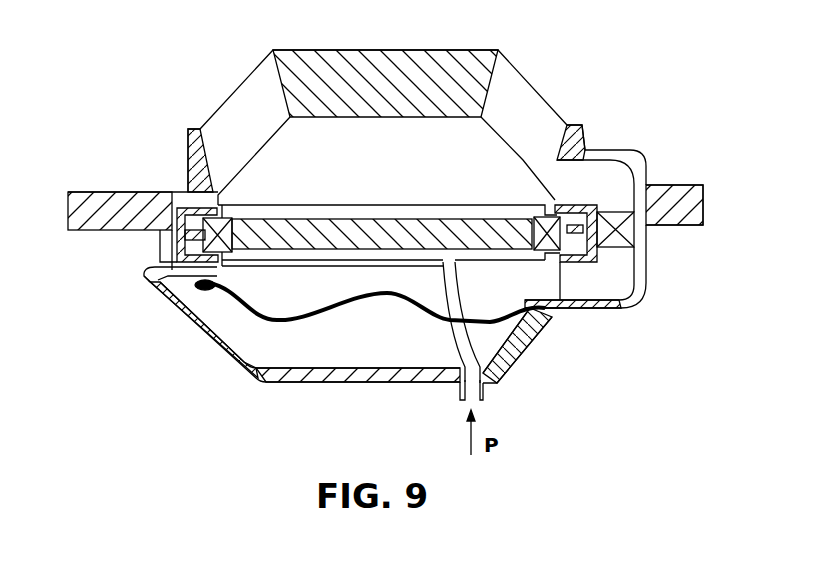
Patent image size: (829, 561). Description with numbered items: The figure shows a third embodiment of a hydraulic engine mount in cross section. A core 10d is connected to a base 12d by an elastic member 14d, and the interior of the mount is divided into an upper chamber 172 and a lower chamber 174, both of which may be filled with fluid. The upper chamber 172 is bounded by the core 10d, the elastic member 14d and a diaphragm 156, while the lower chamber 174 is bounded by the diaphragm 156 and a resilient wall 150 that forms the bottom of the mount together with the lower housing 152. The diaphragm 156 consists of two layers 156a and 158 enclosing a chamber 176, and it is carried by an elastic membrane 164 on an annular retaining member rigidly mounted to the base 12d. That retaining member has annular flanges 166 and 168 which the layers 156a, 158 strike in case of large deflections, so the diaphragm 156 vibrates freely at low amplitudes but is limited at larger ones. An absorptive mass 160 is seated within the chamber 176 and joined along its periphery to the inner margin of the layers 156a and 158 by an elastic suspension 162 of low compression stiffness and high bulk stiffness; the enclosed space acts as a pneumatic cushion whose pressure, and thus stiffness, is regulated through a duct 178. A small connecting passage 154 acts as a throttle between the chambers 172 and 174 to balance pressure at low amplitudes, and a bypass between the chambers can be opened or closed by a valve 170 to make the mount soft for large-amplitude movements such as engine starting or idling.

The core 10d is at (470, 49).
The elastic member 14d is at (518, 80).
The base 12d is at (100, 191).
The upper chamber 172 is at (341, 149).
The valve 170 is at (618, 240).
The annular flange 166 is at (567, 205).
The annular flange 168 is at (580, 262).
The diaphragm layer 158 is at (430, 205).
The diaphragm 156 is at (291, 204).
The absorptive mass 160 is at (326, 250).
The diaphragm layer 156a is at (285, 267).
The elastic suspension 162 is at (231, 217).
The elastic membrane 164 is at (192, 232).
The connecting passage 154 is at (158, 259).
The resilient wall 150 is at (263, 318).
The lower housing 152 is at (282, 382).
The chamber 176 is at (426, 255).
The duct 178 is at (489, 384).
The lower chamber 174 is at (510, 303).